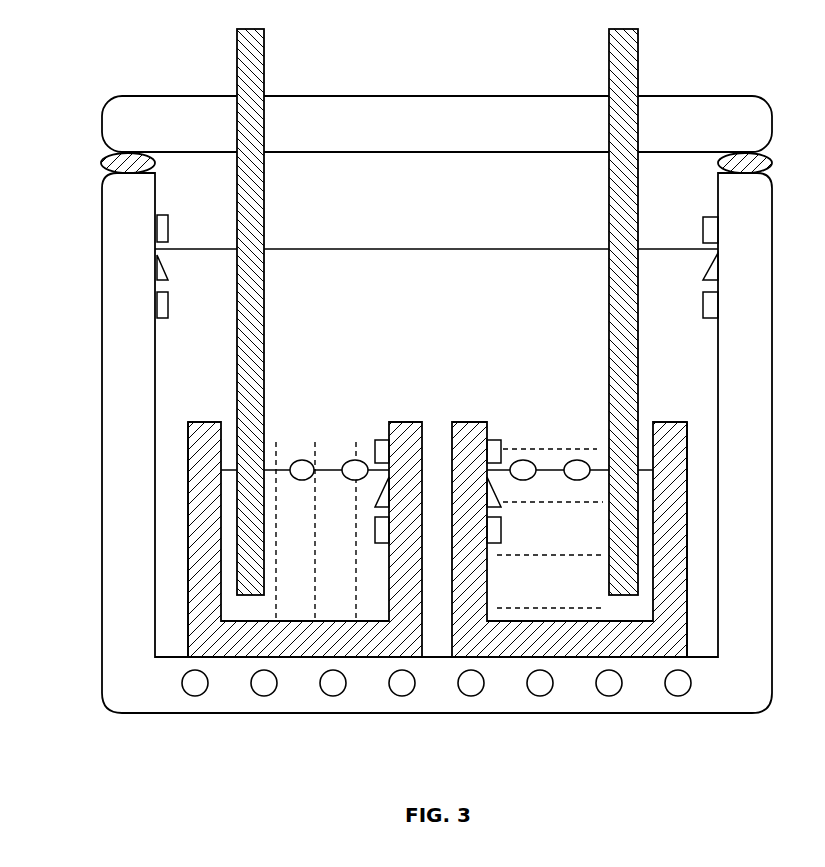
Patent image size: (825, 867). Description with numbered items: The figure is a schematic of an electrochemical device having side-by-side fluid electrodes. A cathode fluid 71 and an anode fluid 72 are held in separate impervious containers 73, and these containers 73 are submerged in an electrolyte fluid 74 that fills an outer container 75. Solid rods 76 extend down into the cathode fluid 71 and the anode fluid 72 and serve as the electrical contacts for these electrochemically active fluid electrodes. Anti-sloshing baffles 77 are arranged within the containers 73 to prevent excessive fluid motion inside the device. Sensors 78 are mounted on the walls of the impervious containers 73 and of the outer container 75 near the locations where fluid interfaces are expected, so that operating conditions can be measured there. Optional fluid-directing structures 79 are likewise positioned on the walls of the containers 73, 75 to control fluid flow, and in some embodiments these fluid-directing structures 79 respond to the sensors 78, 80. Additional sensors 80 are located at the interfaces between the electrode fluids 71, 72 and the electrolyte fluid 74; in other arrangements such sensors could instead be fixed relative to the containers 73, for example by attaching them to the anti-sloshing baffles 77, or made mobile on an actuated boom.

The cathode fluid 71 is at (233, 603).
The anode fluid 72 is at (637, 602).
The impervious container 73 is at (207, 520).
The electrolyte fluid 74 is at (694, 394).
The container 75 is at (577, 700).
The solid rod 76 is at (255, 348).
The anti-sloshing baffle 77 is at (278, 540).
The sensor 78 is at (157, 222).
The fluid-directing structure 79 is at (718, 265).
The sensor 80 is at (306, 466).